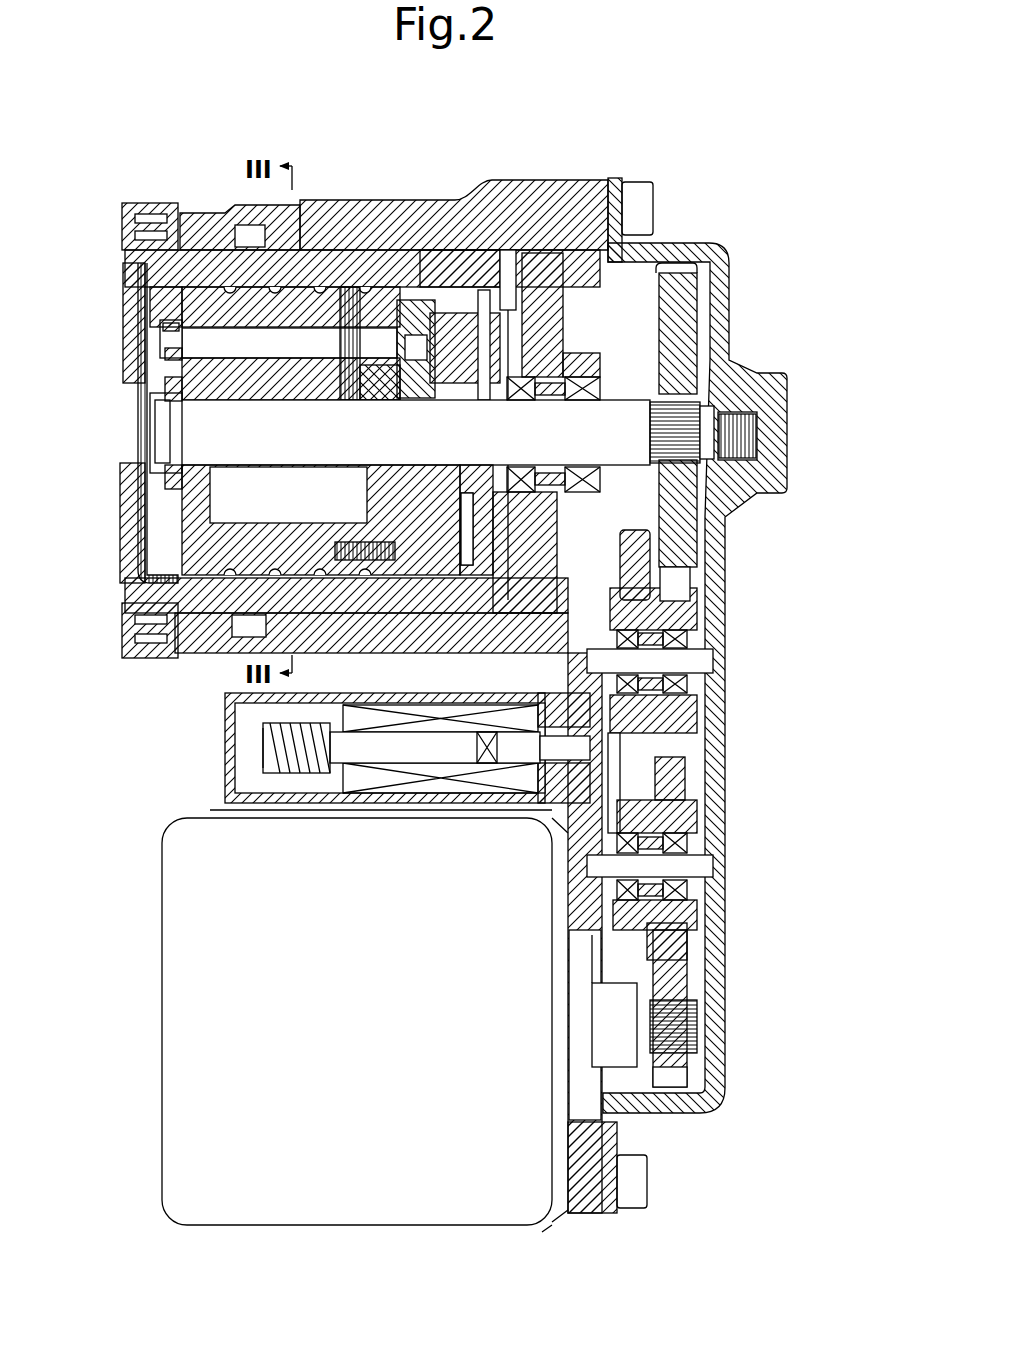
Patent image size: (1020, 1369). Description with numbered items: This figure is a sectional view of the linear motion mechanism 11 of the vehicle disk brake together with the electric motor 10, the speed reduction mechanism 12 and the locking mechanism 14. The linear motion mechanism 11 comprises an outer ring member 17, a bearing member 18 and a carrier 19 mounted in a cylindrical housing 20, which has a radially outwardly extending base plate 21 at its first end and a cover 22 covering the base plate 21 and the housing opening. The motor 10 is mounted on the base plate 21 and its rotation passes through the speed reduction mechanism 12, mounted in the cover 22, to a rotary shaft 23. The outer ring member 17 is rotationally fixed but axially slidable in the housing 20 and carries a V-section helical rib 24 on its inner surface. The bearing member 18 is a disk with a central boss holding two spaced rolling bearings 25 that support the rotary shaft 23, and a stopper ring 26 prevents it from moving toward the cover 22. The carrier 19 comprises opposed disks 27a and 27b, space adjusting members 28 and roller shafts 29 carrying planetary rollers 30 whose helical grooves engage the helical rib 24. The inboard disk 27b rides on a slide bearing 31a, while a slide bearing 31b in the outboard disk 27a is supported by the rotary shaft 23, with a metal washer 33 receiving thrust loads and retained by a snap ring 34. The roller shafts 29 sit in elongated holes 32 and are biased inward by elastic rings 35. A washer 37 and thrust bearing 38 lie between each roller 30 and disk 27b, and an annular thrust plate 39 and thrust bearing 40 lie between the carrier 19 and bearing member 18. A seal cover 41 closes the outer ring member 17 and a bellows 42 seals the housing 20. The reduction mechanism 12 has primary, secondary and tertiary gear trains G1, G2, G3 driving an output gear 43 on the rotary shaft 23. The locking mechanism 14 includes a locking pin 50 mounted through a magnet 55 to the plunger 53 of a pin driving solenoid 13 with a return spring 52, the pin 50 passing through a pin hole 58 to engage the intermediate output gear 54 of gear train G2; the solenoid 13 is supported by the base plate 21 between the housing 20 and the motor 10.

The electric motor 10 is at (440, 1226).
The linear motion mechanism 11 is at (668, 232).
The speed reduction mechanism 12 is at (688, 797).
The pin driving solenoid 13 is at (372, 708).
The locking mechanism 14 is at (367, 778).
The outer ring member 17 is at (345, 238).
The bearing member 18 is at (548, 250).
The carrier 19 is at (180, 553).
The cylindrical housing 20 is at (215, 638).
The base plate 21 is at (586, 1207).
The cover 22 is at (731, 325).
The rotary shaft 23 is at (582, 456).
The helical rib 24 is at (412, 288).
The rolling bearings 25 is at (563, 378).
The stopper ring 26 is at (612, 200).
The disk 27a is at (160, 305).
The disk 27b is at (460, 255).
The space adjusting members 28 is at (262, 528).
The roller shafts 29 is at (262, 345).
The planetary rollers 30 is at (305, 222).
The slide bearing 31a is at (408, 402).
The slide bearing 31b is at (168, 412).
The shaft inserting elongated holes 32 is at (168, 358).
The metal washer 33 is at (170, 500).
The snap ring 34 is at (168, 490).
The elastic rings 35 is at (165, 330).
The washer 37 is at (380, 272).
The thrust bearing 38 is at (332, 345).
The annular thrust plate 39 is at (485, 393).
The thrust bearing 40 is at (508, 275).
The seal cover 41 is at (150, 470).
The bellows 42 is at (150, 205).
The output gear 43 is at (672, 280).
The locking pin 50 is at (503, 745).
The return spring 52 is at (282, 775).
The plunger 53 is at (448, 722).
The intermediate output gear 54 is at (640, 745).
The magnet 55 is at (487, 766).
The pin hole 58 is at (552, 742).
The primary reduction gear train G1 is at (690, 962).
The secondary reduction gear train G2 is at (612, 800).
The tertiary reduction gear train G3 is at (700, 578).